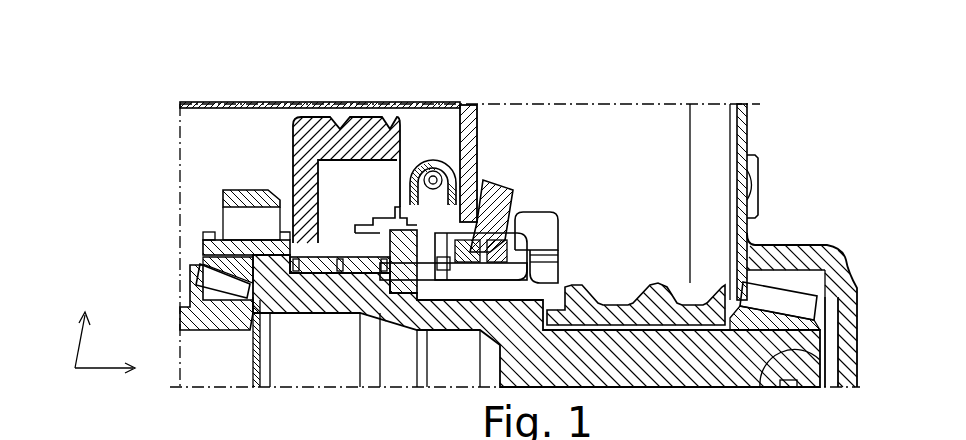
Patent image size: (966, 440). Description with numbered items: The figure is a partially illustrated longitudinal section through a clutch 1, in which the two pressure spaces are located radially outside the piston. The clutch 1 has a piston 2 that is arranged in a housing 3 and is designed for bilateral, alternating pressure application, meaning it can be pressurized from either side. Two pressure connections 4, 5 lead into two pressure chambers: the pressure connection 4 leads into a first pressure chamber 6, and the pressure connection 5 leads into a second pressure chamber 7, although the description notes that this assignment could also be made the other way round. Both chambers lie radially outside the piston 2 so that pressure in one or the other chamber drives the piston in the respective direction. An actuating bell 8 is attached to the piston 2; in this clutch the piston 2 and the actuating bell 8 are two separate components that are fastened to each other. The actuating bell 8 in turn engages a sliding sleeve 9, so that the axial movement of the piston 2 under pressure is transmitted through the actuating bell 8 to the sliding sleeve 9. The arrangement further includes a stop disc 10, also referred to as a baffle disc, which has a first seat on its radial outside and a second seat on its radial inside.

The clutch 1 is at (672, 70).
The piston 2 is at (470, 238).
The housing 3 is at (558, 234).
The pressure connection 4 is at (558, 275).
The pressure connection 5 is at (513, 183).
The first pressure chamber 6 is at (758, 215).
The second pressure chamber 7 is at (505, 236).
The actuating bell 8 is at (405, 228).
The sliding sleeve 9 is at (370, 226).
The stop disc 10 is at (432, 172).